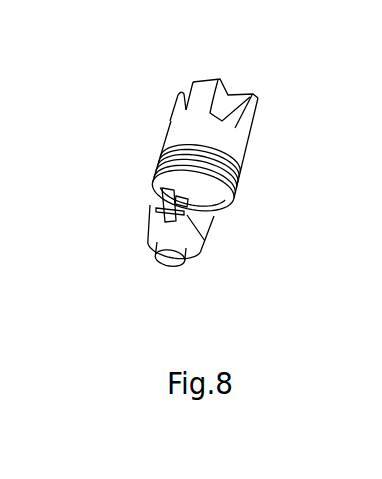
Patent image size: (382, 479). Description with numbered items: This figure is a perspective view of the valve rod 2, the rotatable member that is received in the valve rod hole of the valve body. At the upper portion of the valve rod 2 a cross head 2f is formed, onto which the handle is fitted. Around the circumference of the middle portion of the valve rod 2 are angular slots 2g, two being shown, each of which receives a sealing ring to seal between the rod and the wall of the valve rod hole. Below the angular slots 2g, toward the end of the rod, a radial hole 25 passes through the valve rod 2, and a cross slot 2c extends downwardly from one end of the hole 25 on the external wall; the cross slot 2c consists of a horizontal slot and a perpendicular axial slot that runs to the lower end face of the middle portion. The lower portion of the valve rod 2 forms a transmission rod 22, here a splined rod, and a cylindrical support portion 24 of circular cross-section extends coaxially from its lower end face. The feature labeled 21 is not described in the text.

The valve rod 2 is at (174, 77).
The positioning tab 21 is at (178, 121).
The transmission rod 22 is at (205, 263).
The support portion 24 is at (173, 267).
The radial hole 25 is at (155, 183).
The cross slot 2c is at (188, 205).
The cross head 2f is at (253, 92).
The angular slot 2g is at (238, 168).